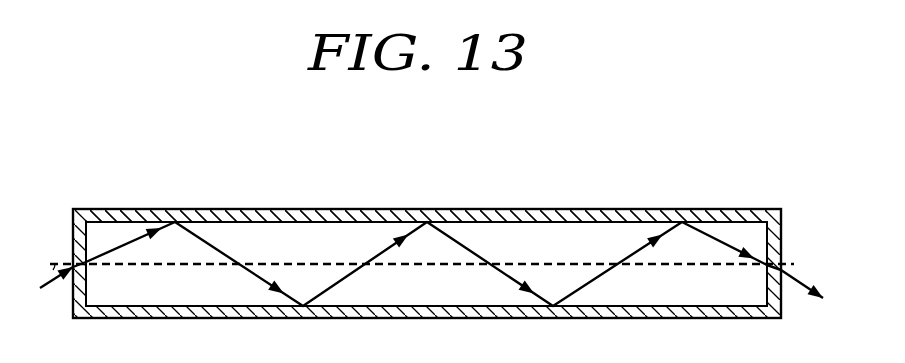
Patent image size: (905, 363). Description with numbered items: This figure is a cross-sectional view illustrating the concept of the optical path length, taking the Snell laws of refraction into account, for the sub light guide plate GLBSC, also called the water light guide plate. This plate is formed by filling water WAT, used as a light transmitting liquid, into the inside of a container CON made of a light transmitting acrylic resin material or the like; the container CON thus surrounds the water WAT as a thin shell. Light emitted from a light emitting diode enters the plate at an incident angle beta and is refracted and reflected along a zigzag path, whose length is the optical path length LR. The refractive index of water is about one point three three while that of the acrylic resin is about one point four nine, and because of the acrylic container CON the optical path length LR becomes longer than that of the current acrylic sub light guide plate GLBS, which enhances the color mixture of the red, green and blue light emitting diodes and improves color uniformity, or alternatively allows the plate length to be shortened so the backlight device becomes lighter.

The optical path length LR is at (262, 240).
The sub light guide plate GLBS is at (490, 232).
The water light guide plate GLBSC is at (426, 160).
The container CON is at (574, 209).
The water WAT is at (630, 209).